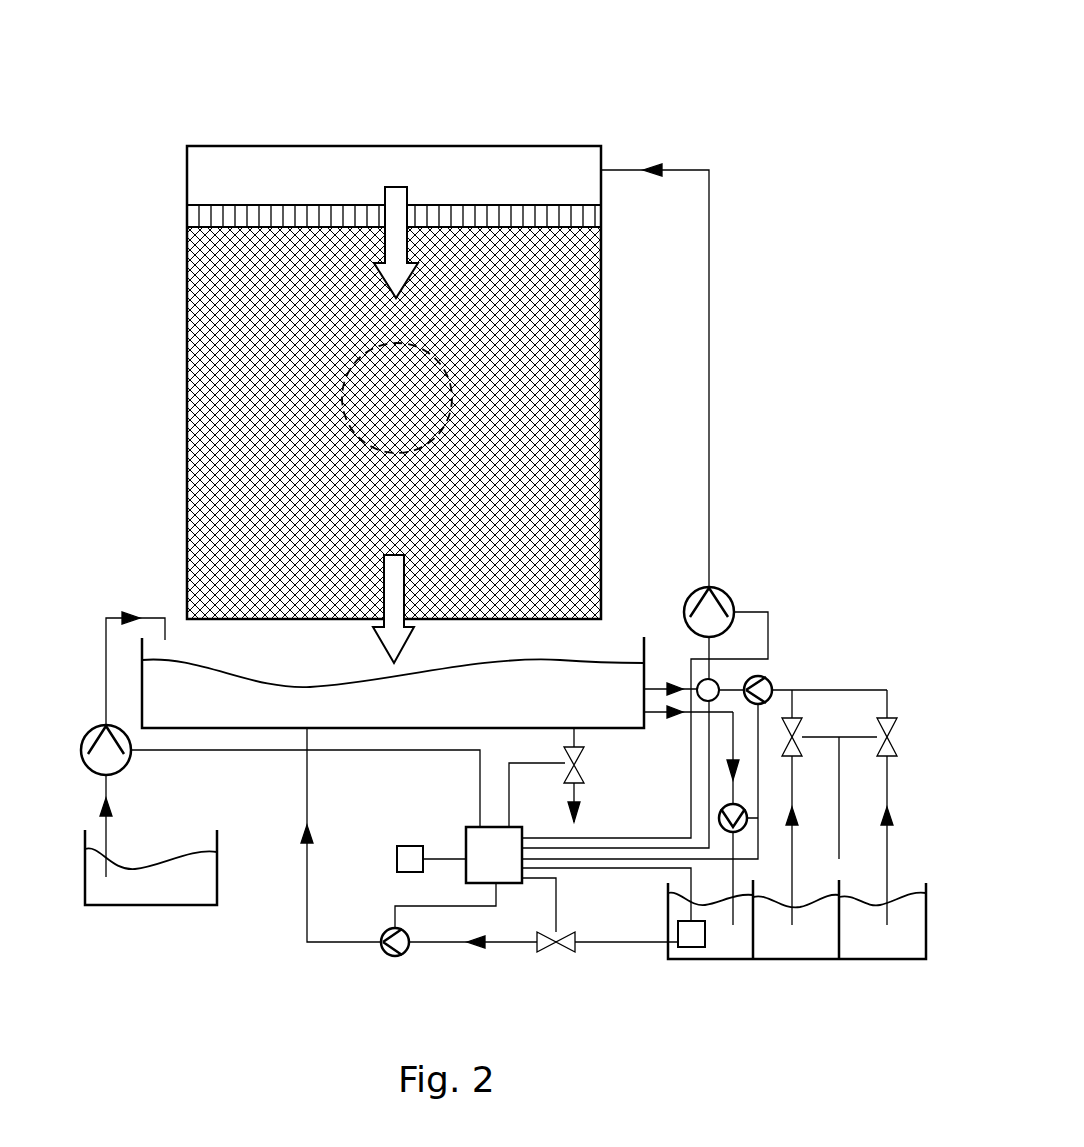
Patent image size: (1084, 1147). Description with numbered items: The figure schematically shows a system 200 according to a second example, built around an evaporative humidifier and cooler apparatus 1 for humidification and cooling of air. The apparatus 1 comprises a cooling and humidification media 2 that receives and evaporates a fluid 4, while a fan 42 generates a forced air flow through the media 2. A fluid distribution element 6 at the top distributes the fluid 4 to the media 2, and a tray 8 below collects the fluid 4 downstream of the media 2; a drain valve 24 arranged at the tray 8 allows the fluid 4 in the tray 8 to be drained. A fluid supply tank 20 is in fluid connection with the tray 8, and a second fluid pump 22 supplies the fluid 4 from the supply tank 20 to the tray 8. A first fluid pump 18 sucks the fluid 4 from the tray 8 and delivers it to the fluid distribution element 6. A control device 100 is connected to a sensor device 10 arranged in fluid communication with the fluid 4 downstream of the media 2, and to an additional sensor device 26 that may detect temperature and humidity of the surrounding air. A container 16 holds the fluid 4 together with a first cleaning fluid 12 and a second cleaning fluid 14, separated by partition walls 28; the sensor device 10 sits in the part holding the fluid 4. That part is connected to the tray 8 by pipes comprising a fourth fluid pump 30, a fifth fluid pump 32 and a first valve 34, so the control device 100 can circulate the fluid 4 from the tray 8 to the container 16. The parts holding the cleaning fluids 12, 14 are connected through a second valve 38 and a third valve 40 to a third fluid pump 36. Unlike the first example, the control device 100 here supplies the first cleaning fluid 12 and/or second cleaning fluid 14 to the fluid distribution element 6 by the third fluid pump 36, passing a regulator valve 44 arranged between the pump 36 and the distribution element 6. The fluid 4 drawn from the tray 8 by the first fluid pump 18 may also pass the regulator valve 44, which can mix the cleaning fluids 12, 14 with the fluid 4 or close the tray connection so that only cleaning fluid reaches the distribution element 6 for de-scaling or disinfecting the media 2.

The evaporative humidifier and cooler apparatus 1 is at (481, 70).
The system 200 is at (860, 276).
The cooling and humidification media 2 is at (245, 370).
The fluid distribution element 6 is at (187, 175).
The fan 42 is at (342, 408).
The drain valve 24 is at (383, 190).
The tray 8 is at (646, 652).
The fluid 4 is at (318, 703).
The second fluid pump 22 is at (85, 738).
The fluid supply tank 20 is at (95, 905).
The first fluid pump 18 is at (722, 592).
The regulator valve 44 is at (718, 680).
The third fluid pump 36 is at (768, 679).
The second valve 38 is at (802, 720).
The third valve 40 is at (893, 720).
The fourth fluid pump 30 is at (745, 803).
The control device 100 is at (466, 840).
The additional sensor device 26 is at (397, 870).
The fifth fluid pump 32 is at (383, 950).
The first valve 34 is at (543, 953).
The sensor device 10 is at (668, 960).
The container 16 is at (715, 960).
The partition walls 28 is at (772, 958).
The first cleaning fluid 12 is at (800, 960).
The second cleaning fluid 14 is at (897, 960).